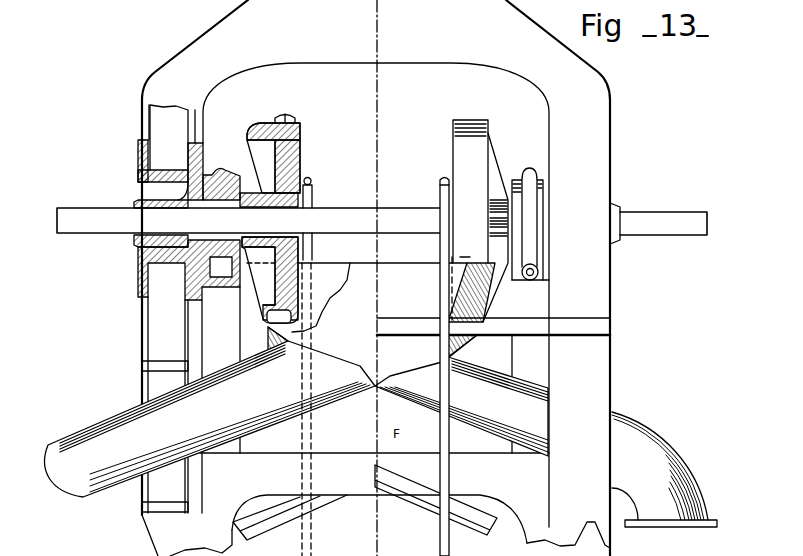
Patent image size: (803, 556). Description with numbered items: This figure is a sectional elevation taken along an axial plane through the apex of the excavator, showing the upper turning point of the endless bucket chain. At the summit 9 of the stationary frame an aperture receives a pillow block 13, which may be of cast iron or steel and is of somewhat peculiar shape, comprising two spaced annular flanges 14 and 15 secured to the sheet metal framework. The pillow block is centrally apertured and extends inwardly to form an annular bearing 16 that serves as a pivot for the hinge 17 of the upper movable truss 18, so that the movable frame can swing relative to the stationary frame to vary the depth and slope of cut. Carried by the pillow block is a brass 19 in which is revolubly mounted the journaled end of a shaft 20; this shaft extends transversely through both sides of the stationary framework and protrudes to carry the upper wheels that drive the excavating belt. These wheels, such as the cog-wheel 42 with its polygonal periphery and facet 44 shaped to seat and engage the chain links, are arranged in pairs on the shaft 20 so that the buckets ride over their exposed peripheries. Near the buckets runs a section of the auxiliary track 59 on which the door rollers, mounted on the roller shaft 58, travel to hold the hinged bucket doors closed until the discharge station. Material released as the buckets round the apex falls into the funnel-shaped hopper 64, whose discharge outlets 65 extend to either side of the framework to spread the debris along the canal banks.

The summit 9 is at (376, 278).
The pillow block 13 is at (168, 172).
The annular flange 14 is at (201, 152).
The annular flange 15 is at (140, 157).
The annular bearing 16 is at (243, 193).
The hinge 17 is at (216, 174).
The upper movable truss 18 is at (343, 376).
The brass 19 is at (135, 201).
The shaft 20 is at (58, 210).
The cog-wheel 42 is at (268, 147).
The facet 44 is at (284, 120).
The shaft 58 is at (441, 356).
The auxiliary track 59 is at (313, 174).
The funnel-shaped hopper 64 is at (374, 318).
The discharge outlet 65 is at (664, 478).